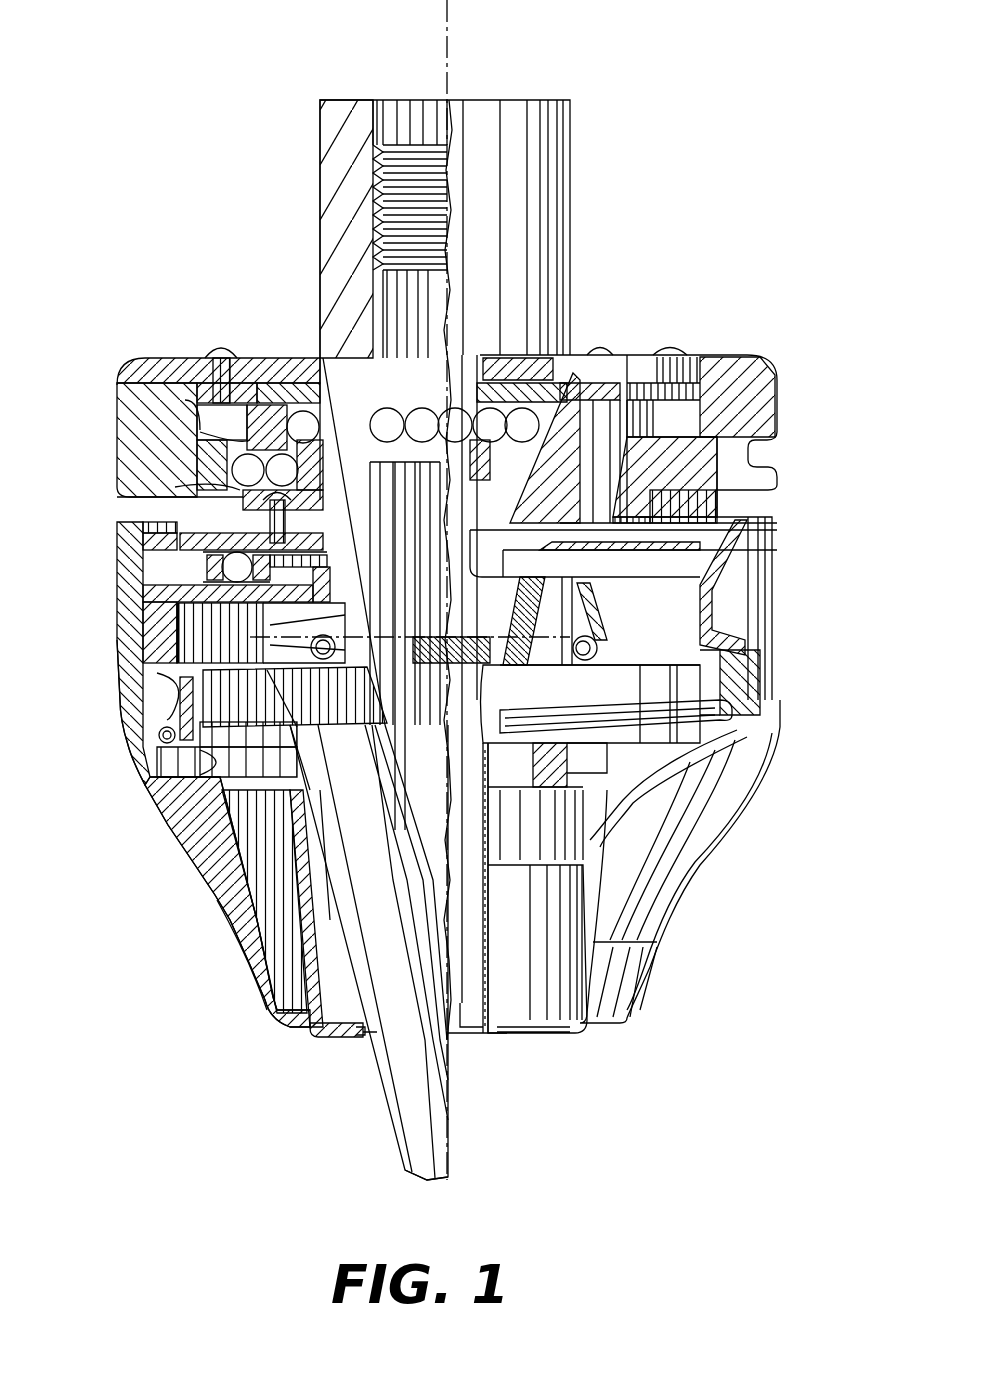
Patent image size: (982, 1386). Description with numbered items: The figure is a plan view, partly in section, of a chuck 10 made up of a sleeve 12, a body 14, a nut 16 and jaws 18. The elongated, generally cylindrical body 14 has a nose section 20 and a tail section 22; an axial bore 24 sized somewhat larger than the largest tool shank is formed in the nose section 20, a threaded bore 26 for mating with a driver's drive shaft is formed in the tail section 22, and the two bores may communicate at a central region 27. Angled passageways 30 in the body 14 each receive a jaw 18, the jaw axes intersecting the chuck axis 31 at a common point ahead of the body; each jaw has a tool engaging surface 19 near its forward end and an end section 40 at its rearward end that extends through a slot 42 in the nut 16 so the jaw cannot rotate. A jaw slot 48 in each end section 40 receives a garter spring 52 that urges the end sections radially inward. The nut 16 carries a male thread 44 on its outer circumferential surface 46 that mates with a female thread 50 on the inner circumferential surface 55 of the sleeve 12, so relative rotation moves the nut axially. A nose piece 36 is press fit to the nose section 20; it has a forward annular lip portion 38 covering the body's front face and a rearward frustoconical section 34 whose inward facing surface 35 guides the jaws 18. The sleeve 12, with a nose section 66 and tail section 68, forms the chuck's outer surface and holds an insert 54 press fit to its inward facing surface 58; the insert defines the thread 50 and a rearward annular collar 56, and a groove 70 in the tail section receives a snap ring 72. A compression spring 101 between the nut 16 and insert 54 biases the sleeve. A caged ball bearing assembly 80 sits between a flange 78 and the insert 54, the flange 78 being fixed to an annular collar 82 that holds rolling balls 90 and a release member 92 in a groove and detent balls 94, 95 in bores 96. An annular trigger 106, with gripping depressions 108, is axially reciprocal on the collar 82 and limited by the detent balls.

The chuck 10 is at (757, 295).
The sleeve 12 is at (155, 822).
The body 14 is at (320, 208).
The nut 16 is at (160, 777).
The jaws 18 is at (395, 1120).
The tool engaging surface 19 is at (450, 1120).
The nose section 20 is at (287, 967).
The tail section 22 is at (320, 130).
The axial bore 24 is at (458, 1040).
The threaded bore 26 is at (400, 173).
The central region 27 is at (450, 395).
The passageways 30 is at (352, 958).
The chuck axis 31 is at (449, 40).
The frustoconical section 34 is at (280, 830).
The radially inward facing surface 35 is at (305, 820).
The nose piece 36 is at (312, 1030).
The annular lip portion 38 is at (353, 1033).
The end section 40 is at (177, 633).
The slot 42 is at (157, 673).
The male thread 44 is at (180, 722).
The outer circumferential surface 46 is at (157, 752).
The jaw slot 48 is at (250, 648).
The female thread 50 is at (740, 725).
The garter spring 52 is at (740, 650).
The insert 54 is at (180, 545).
The inner circumferential surface 55 is at (735, 683).
The annular collar 56 is at (143, 592).
The radially inward facing surface 58 is at (760, 668).
The nose section 66 is at (653, 965).
The tail section 68 is at (777, 522).
The groove 70 is at (118, 530).
The snap ring 72 is at (143, 548).
The flange 78 is at (745, 555).
The caged ball bearing assembly 80 is at (700, 578).
The annular collar 82 is at (150, 358).
The rolling balls 90 is at (266, 352).
The release member 92 is at (265, 500).
The detent ball 94 is at (200, 410).
The detent ball 95 is at (250, 440).
The bores 96 is at (240, 490).
The compression spring 101 is at (159, 737).
The trigger 106 is at (777, 372).
The gripping depressions 108 is at (758, 455).